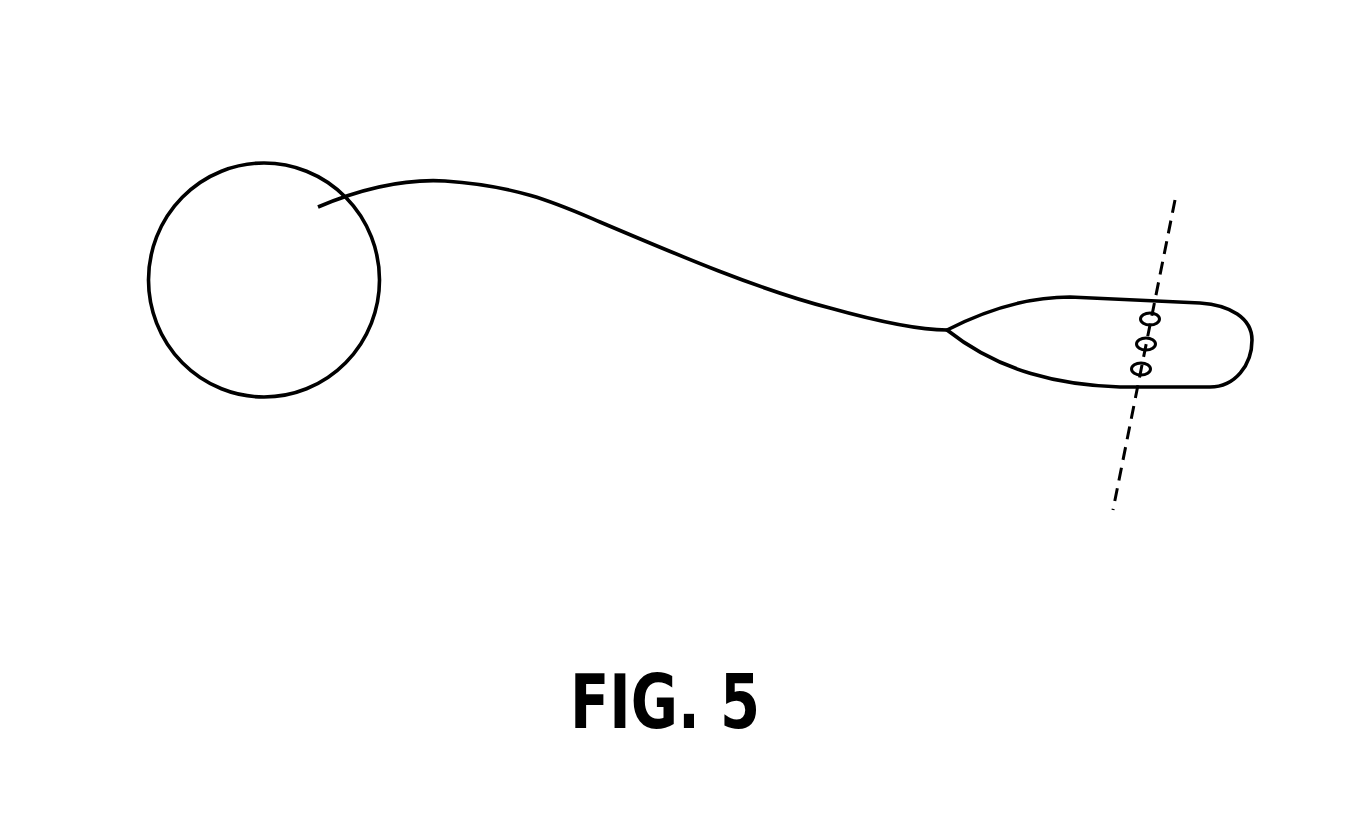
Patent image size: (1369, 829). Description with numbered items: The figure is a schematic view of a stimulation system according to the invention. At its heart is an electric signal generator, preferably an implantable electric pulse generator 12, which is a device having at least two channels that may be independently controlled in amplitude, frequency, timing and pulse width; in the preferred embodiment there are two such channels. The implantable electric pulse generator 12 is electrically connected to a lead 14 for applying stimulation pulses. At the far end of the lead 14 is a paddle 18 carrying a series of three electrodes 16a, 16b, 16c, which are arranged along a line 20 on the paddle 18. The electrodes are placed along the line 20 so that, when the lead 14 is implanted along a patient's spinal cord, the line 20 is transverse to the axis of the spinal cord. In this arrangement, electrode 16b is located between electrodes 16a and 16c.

The implantable electric pulse generator 12 is at (238, 222).
The lead 14 is at (597, 227).
The electrode 16a is at (1147, 318).
The electrode 16b is at (1135, 345).
The electrode 16c is at (1150, 372).
The paddle 18 is at (1223, 332).
The line 20 is at (1165, 243).